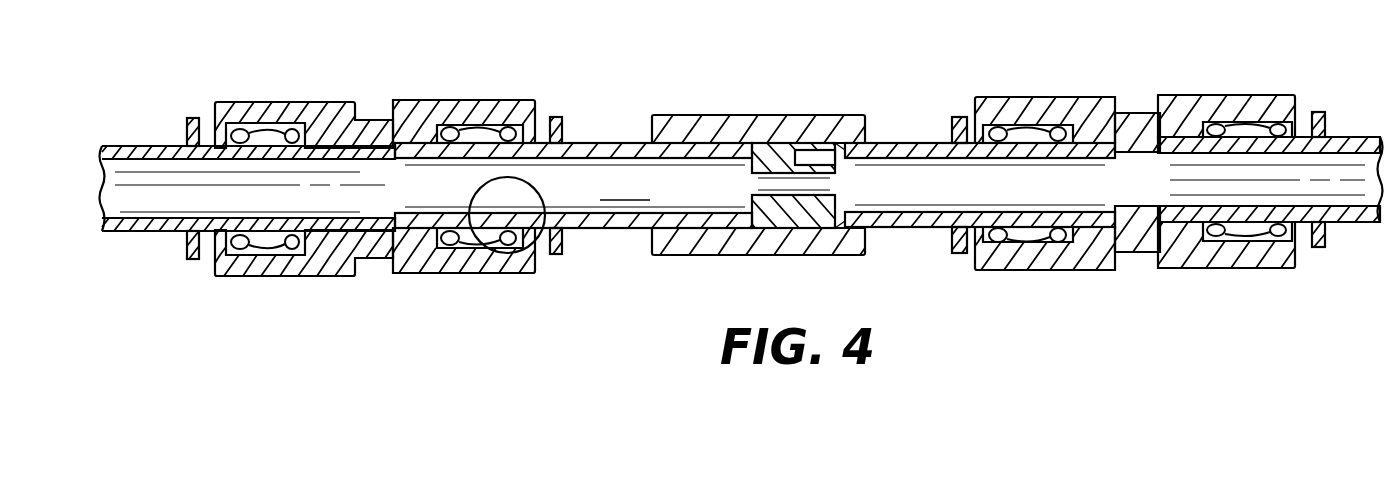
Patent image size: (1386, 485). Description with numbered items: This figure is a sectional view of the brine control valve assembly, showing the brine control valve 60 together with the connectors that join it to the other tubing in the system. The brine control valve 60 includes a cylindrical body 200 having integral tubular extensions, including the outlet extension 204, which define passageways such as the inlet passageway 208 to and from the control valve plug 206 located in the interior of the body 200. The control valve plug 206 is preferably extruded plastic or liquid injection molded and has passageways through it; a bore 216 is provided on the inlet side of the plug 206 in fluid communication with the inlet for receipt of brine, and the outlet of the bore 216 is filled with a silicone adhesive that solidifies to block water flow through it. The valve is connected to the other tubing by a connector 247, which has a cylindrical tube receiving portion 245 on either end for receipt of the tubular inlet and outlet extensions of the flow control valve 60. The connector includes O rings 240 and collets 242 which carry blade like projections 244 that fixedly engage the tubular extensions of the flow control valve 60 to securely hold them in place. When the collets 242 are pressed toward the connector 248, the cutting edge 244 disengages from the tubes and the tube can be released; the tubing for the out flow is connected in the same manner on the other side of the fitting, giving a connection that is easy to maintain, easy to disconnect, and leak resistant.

The brine control valve 60 is at (674, 300).
The cylindrical body 200 is at (851, 115).
The outlet extension 204 is at (490, 196).
The control valve plug 206 is at (805, 230).
The inlet passageway 208 is at (624, 182).
The bore 216 is at (808, 158).
The O rings 240 is at (1074, 98).
The collets 242 is at (186, 132).
The blade like projections 244 is at (496, 236).
The cylindrical tube receiving portion 245 is at (332, 180).
The connector 247 is at (1246, 95).
The connector 248 is at (1118, 110).